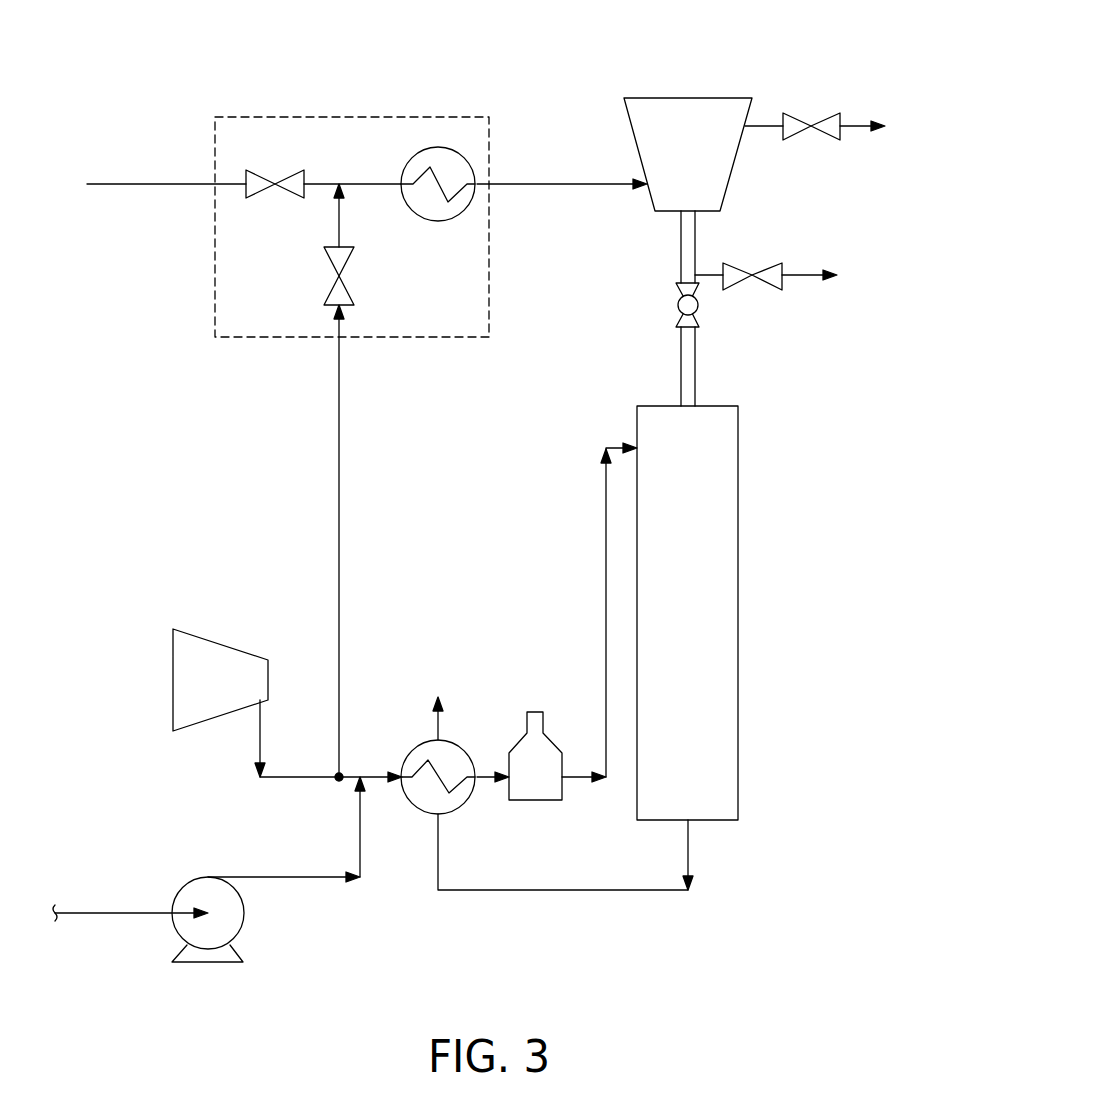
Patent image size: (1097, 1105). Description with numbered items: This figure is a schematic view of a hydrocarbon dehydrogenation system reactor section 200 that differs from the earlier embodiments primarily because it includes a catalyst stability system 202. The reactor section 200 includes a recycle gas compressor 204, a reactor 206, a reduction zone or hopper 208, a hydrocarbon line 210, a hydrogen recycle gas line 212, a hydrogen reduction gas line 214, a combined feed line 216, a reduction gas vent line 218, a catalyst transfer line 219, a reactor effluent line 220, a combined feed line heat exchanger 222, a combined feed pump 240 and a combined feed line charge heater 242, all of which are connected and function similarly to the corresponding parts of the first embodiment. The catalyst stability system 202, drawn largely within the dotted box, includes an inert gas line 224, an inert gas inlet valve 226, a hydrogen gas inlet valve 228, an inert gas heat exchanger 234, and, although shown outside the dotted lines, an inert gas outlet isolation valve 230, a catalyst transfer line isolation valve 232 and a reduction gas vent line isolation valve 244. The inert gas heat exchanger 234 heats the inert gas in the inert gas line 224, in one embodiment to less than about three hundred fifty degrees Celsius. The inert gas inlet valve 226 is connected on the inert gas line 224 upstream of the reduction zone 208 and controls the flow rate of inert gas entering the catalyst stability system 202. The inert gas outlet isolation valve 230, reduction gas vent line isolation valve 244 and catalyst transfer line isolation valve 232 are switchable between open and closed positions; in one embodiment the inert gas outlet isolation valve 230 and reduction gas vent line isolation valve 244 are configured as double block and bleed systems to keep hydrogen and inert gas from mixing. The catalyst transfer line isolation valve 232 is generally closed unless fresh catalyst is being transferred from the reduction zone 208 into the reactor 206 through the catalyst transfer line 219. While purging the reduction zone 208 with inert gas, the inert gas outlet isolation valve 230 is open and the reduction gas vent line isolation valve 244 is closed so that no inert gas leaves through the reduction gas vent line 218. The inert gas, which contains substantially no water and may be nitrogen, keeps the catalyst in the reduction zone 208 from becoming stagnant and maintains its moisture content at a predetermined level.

The hydrocarbon dehydrogenation system reactor section 200 is at (818, 38).
The catalyst stability system 202 is at (224, 100).
The recycle gas compressor 204 is at (172, 657).
The reactor 206 is at (724, 405).
The reduction zone 208 is at (738, 97).
The hydrocarbon line 210 is at (283, 880).
The hydrogen recycle gas line 212 is at (299, 782).
The hydrogen reduction gas line 214 is at (339, 521).
The combined feed line 216 is at (606, 521).
The reduction gas vent line 218 is at (856, 121).
The catalyst transfer line 219 is at (680, 247).
The reactor effluent line 220 is at (563, 893).
The combined feed line heat exchanger 222 is at (418, 745).
The inert gas line 224 is at (108, 182).
The inert gas inlet valve 226 is at (258, 170).
The hydrogen gas inlet valve 228 is at (350, 288).
The inert gas outlet isolation valve 230 is at (780, 264).
The catalyst transfer line isolation valve 232 is at (677, 305).
The inert gas heat exchanger 234 is at (438, 148).
The combined feed pump 240 is at (188, 878).
The combined feed line charge heater 242 is at (538, 711).
The reduction gas vent line isolation valve 244 is at (830, 140).